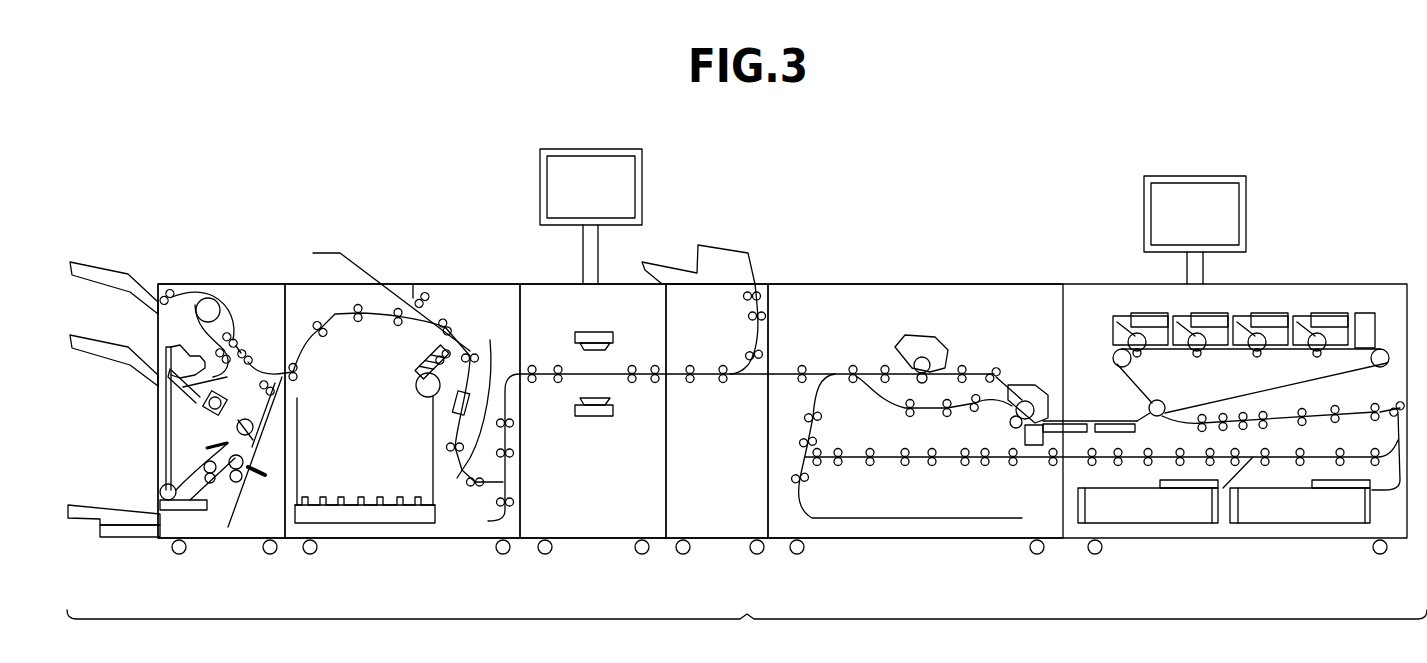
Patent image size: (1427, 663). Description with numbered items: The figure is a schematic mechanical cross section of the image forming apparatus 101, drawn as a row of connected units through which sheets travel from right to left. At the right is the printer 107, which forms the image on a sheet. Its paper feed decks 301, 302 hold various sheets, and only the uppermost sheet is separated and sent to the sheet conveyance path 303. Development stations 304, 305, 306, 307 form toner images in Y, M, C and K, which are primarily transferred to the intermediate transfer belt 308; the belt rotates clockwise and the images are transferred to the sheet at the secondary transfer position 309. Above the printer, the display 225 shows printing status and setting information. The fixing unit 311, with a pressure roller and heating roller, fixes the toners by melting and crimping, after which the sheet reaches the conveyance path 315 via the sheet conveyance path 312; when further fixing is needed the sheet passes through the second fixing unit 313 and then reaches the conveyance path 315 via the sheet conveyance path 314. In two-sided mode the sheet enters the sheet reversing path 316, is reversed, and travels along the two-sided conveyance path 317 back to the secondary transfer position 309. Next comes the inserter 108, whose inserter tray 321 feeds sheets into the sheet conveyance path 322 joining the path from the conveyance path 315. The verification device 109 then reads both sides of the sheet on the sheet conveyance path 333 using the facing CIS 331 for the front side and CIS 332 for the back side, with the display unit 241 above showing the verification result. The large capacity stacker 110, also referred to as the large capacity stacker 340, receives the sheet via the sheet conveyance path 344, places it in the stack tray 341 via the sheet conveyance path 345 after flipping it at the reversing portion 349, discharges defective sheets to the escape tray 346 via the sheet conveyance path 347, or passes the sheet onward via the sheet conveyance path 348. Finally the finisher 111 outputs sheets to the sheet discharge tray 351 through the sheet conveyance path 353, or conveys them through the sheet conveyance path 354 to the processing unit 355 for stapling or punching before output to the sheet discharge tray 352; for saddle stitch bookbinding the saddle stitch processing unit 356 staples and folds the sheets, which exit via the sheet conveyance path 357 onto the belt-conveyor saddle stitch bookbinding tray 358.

The image forming apparatus 101 is at (747, 472).
The printer 107 is at (921, 541).
The inserter 108 is at (724, 541).
The verification device 109 is at (597, 541).
The large capacity stacker 110 is at (479, 541).
The finisher 111 is at (243, 541).
The display 225 is at (1190, 190).
The display unit 241 is at (590, 168).
The paper feed deck 301 is at (1163, 524).
The paper feed deck 302 is at (1313, 524).
The sheet conveyance path 303 is at (1372, 312).
The development station 304 is at (1333, 312).
The development station 305 is at (1278, 312).
The development station 306 is at (1213, 312).
The development station 307 is at (1140, 310).
The intermediate transfer belt 308 is at (1237, 398).
The secondary transfer position 309 is at (1150, 410).
The fixing unit 311 is at (1022, 387).
The sheet conveyance path 312 is at (880, 380).
The second fixing unit 313 is at (922, 345).
The sheet conveyance path 314 is at (870, 373).
The conveyance path 315 is at (783, 372).
The sheet reversing path 316 is at (893, 516).
The two-sided conveyance path 317 is at (1030, 458).
The inserter tray 321 is at (673, 268).
The sheet conveyance path 322 is at (748, 338).
The CIS 331 is at (590, 330).
The CIS 332 is at (597, 417).
The sheet conveyance path 333 is at (572, 372).
The large capacity stacker 340 is at (503, 283).
The stack tray 341 is at (300, 468).
The sheet conveyance path 344 is at (484, 418).
The sheet conveyance path 345 is at (455, 350).
The escape tray 346 is at (352, 258).
The sheet conveyance path 347 is at (443, 318).
The sheet conveyance path 348 is at (340, 312).
The reversing portion 349 is at (487, 521).
The sheet discharge tray 351 is at (95, 267).
The sheet discharge tray 352 is at (85, 337).
The sheet conveyance path 353 is at (170, 295).
The sheet conveyance path 354 is at (205, 337).
The processing unit 355 is at (177, 401).
The saddle stitch processing unit 356 is at (274, 535).
The sheet conveyance path 357 is at (190, 511).
The saddle stitch bookbinding tray 358 is at (100, 505).